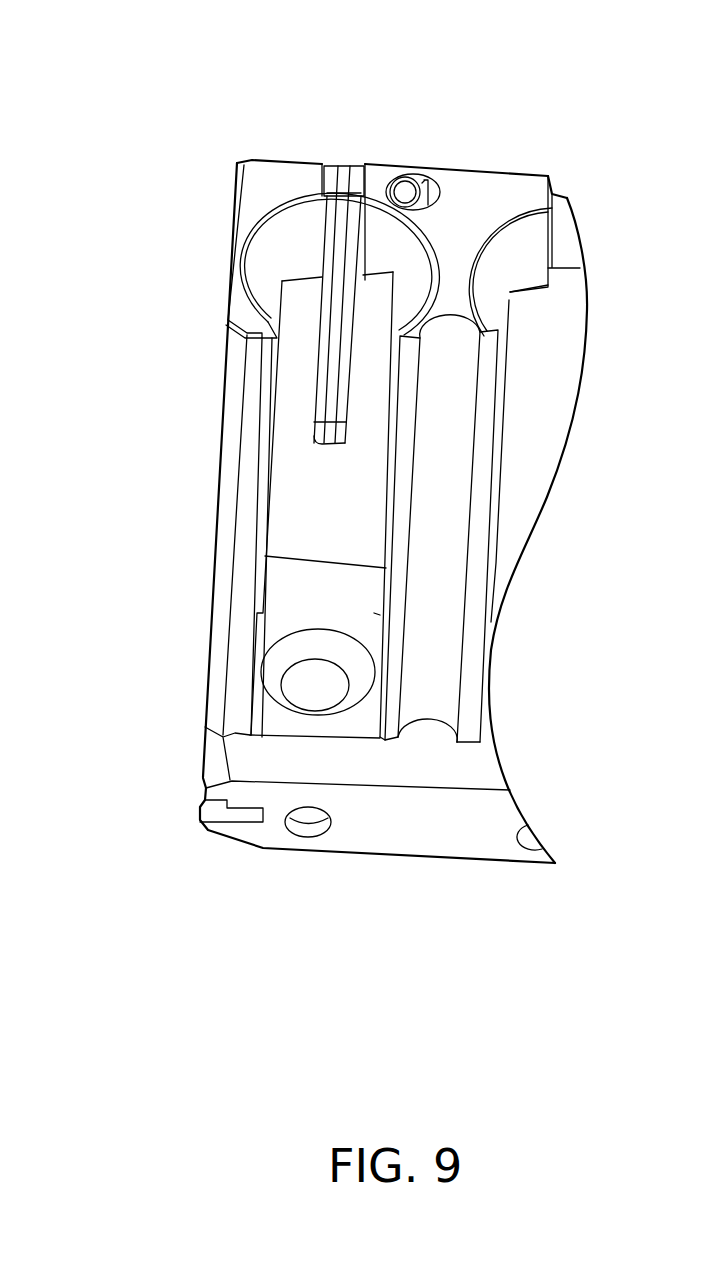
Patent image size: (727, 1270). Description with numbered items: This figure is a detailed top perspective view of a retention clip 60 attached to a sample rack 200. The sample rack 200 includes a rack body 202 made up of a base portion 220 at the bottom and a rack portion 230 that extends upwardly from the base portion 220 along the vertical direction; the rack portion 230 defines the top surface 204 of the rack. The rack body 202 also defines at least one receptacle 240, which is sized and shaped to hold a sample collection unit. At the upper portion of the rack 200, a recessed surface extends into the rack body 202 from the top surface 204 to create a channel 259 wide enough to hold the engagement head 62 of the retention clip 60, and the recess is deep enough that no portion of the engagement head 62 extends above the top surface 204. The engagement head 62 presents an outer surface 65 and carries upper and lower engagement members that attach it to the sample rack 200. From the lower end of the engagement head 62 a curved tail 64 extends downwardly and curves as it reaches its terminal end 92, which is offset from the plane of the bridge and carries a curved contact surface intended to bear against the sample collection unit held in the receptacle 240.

The sample rack 200 is at (133, 72).
The top surface 204 is at (262, 175).
The retention clip 60 is at (318, 184).
The channel 259 is at (345, 152).
The outer surface 65 is at (356, 170).
The receptacle 240 is at (408, 258).
The engagement head 62 is at (313, 242).
The rack body 202 is at (243, 318).
The rack portion 230 is at (212, 429).
The curved tail 64 is at (325, 402).
The terminal end 92 is at (350, 438).
The base portion 220 is at (193, 767).